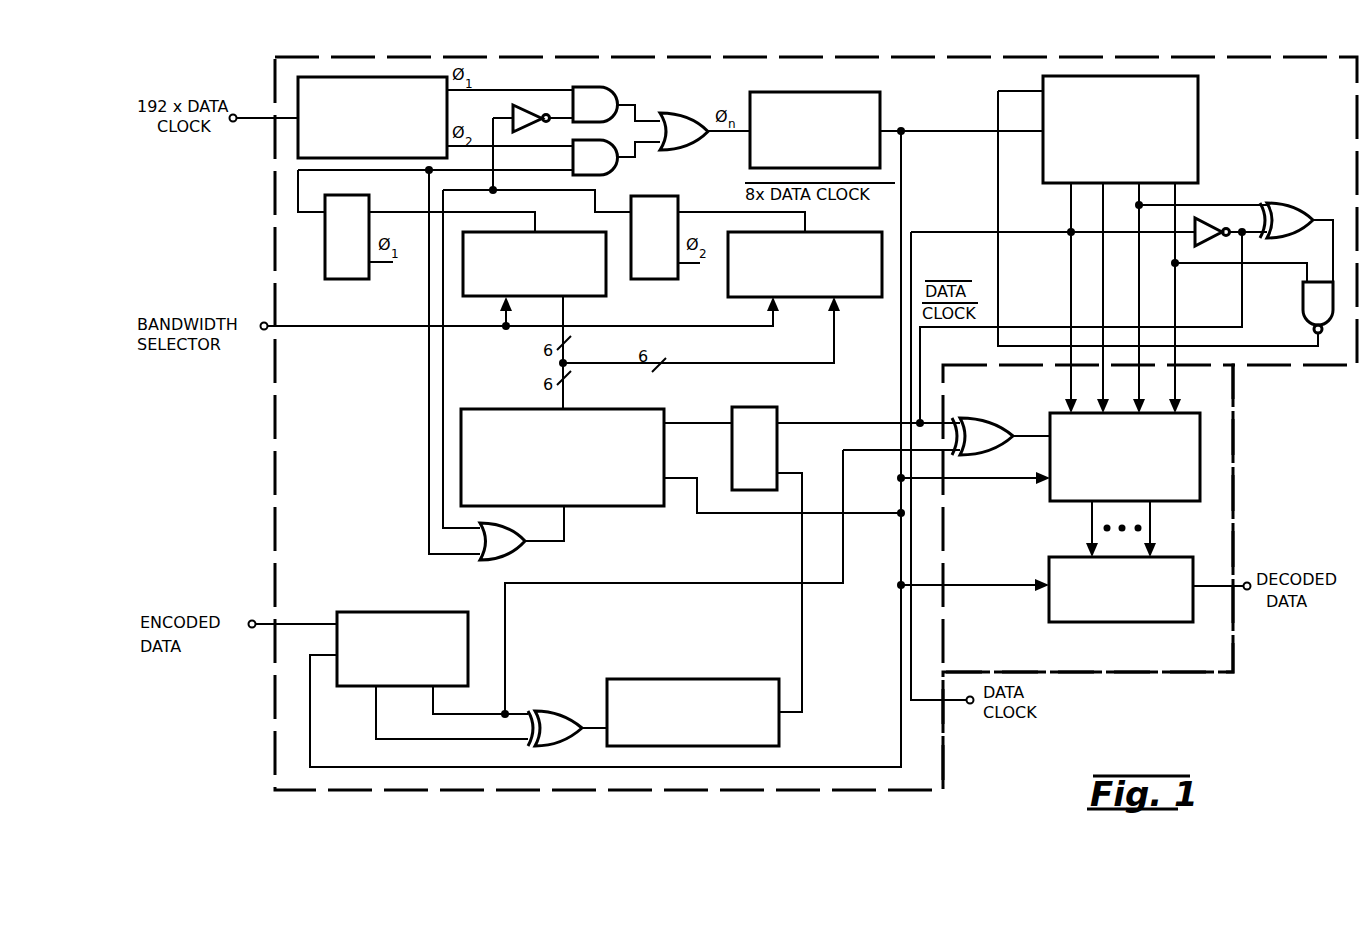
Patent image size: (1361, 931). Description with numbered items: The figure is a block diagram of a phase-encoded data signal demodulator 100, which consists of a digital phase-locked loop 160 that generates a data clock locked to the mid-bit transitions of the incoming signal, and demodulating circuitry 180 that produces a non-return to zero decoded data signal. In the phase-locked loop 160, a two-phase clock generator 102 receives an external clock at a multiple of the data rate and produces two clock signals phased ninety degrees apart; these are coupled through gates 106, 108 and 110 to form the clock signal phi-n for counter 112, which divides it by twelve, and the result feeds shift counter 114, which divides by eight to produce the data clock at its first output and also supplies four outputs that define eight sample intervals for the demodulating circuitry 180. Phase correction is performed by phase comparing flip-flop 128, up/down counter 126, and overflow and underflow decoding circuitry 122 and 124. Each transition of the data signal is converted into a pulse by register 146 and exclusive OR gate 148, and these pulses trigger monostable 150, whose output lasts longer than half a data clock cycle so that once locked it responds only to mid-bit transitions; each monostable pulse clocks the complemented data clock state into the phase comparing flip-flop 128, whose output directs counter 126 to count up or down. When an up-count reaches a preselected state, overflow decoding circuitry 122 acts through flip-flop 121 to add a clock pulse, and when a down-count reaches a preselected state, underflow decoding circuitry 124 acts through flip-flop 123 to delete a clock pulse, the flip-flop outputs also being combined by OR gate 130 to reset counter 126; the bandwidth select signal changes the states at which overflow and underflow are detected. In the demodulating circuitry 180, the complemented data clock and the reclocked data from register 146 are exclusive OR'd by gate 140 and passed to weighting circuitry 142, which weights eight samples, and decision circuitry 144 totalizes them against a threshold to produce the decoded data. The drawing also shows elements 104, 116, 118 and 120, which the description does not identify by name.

The data signal demodulator 100 is at (212, 218).
The two-phase clock generator 102 is at (302, 94).
The inverter 104 is at (512, 110).
The gate 106 is at (612, 92).
The gate 108 is at (610, 167).
The gate 110 is at (680, 118).
The counter 112 is at (824, 100).
The shift counter 114 is at (1195, 113).
The inverter 116 is at (1212, 216).
The exclusive OR gate 118 is at (1288, 208).
The NAND gate 120 is at (1304, 320).
The flip-flop 121 is at (352, 280).
The overflow decoding circuitry 122 is at (603, 293).
The flip-flop 123 is at (676, 198).
The underflow decoding circuitry 124 is at (733, 292).
The up/down counter 126 is at (643, 410).
The phase comparing flip-flop 128 is at (770, 412).
The OR gate 130 is at (518, 543).
The exclusive OR gate 140 is at (983, 425).
The weighting circuitry 142 is at (1053, 498).
The decision circuitry 144 is at (1053, 575).
The register 146 is at (398, 620).
The exclusive OR gate 148 is at (555, 716).
The monostable 150 is at (684, 684).
The digital phase-locked loop 160 is at (943, 713).
The demodulating circuitry 180 is at (1165, 674).